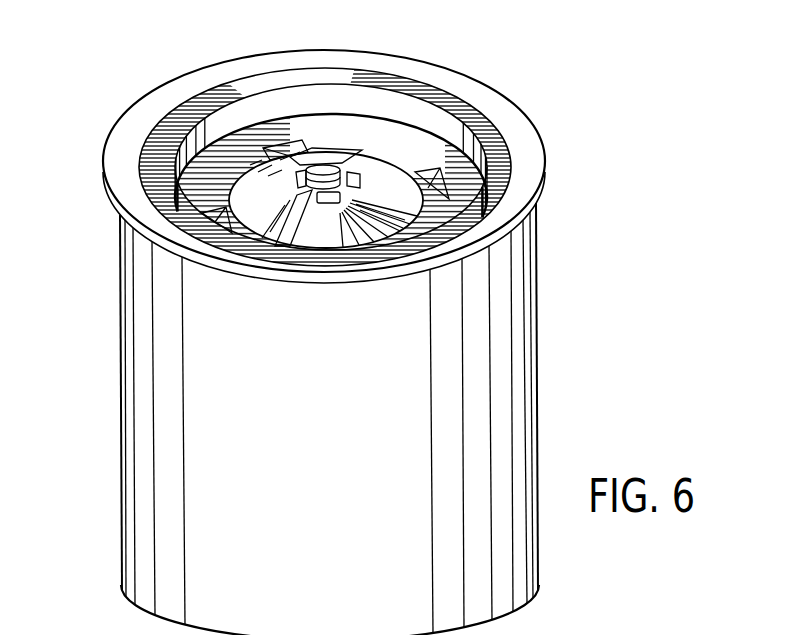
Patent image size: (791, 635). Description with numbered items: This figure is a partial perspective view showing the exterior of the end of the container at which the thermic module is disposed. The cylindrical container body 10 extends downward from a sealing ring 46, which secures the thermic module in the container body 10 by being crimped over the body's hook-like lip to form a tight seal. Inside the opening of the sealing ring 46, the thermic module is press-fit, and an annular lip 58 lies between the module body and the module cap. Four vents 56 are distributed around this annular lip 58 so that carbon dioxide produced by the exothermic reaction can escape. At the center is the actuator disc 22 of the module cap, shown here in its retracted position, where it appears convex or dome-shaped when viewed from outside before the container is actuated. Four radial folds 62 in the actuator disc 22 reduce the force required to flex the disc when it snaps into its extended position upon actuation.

The container body 10 is at (122, 340).
The sealing ring 46 is at (155, 96).
The annular lip 58 is at (405, 148).
The vents 56 is at (297, 150).
The radial folds 62 is at (290, 230).
The actuator disc 22 is at (341, 243).